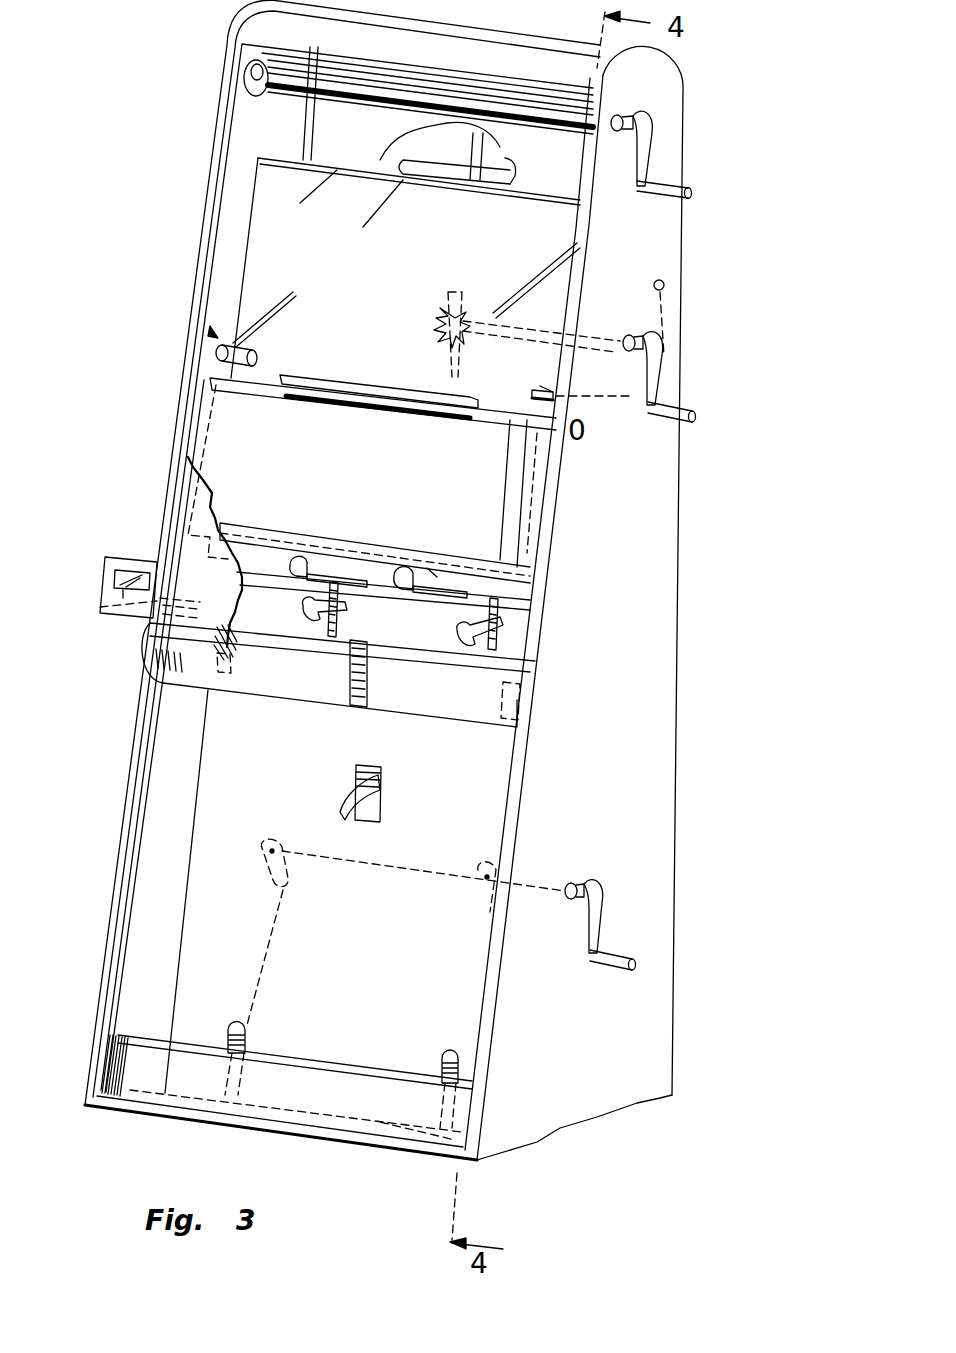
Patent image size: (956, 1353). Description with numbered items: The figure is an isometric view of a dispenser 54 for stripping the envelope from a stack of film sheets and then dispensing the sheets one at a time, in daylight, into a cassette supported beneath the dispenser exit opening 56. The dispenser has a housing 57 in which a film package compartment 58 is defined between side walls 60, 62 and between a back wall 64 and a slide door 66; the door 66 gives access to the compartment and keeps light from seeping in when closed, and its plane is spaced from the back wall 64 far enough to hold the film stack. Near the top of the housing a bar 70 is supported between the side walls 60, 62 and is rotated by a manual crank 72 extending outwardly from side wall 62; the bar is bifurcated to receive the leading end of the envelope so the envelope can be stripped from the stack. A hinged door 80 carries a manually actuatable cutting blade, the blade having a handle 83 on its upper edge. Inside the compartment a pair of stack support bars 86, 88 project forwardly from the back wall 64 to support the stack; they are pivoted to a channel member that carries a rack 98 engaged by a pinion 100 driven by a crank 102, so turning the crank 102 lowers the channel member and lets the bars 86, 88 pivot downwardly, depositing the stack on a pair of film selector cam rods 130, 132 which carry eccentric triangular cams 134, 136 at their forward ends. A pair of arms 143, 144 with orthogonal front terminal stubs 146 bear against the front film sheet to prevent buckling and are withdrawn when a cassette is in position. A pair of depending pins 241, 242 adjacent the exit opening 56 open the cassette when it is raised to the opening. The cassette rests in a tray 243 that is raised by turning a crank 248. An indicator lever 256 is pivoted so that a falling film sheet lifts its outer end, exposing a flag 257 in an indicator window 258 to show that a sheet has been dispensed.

The dispenser 54 is at (634, 600).
The dispenser exit opening 56 is at (358, 718).
The housing 57 is at (205, 175).
The film package compartment 58 is at (268, 243).
The side wall 60 is at (655, 250).
The side wall 62 is at (284, 138).
The back wall 64 is at (380, 138).
The slide door 66 is at (190, 553).
The bar 70 is at (560, 113).
The manual crank 72 is at (663, 186).
The door 80 is at (412, 475).
The handle 83 is at (352, 393).
The stack support bar 86 is at (303, 622).
The stack support bar 88 is at (458, 642).
The rack 98 is at (466, 310).
The pinion 100 is at (446, 310).
The crank 102 is at (668, 412).
The film selector cam rod 130 is at (370, 588).
The film selector cam rod 132 is at (442, 598).
The cam 134 is at (298, 574).
The cam 136 is at (400, 592).
The arm 143 is at (260, 348).
The arm 144 is at (536, 382).
The front terminal stub 146 is at (534, 397).
The depending pin 241 is at (501, 725).
The depending pin 242 is at (230, 677).
The tray 243 is at (345, 1102).
The crank 248 is at (596, 935).
The lever 256 is at (193, 610).
The flag 257 is at (108, 608).
The indicator window 258 is at (118, 575).